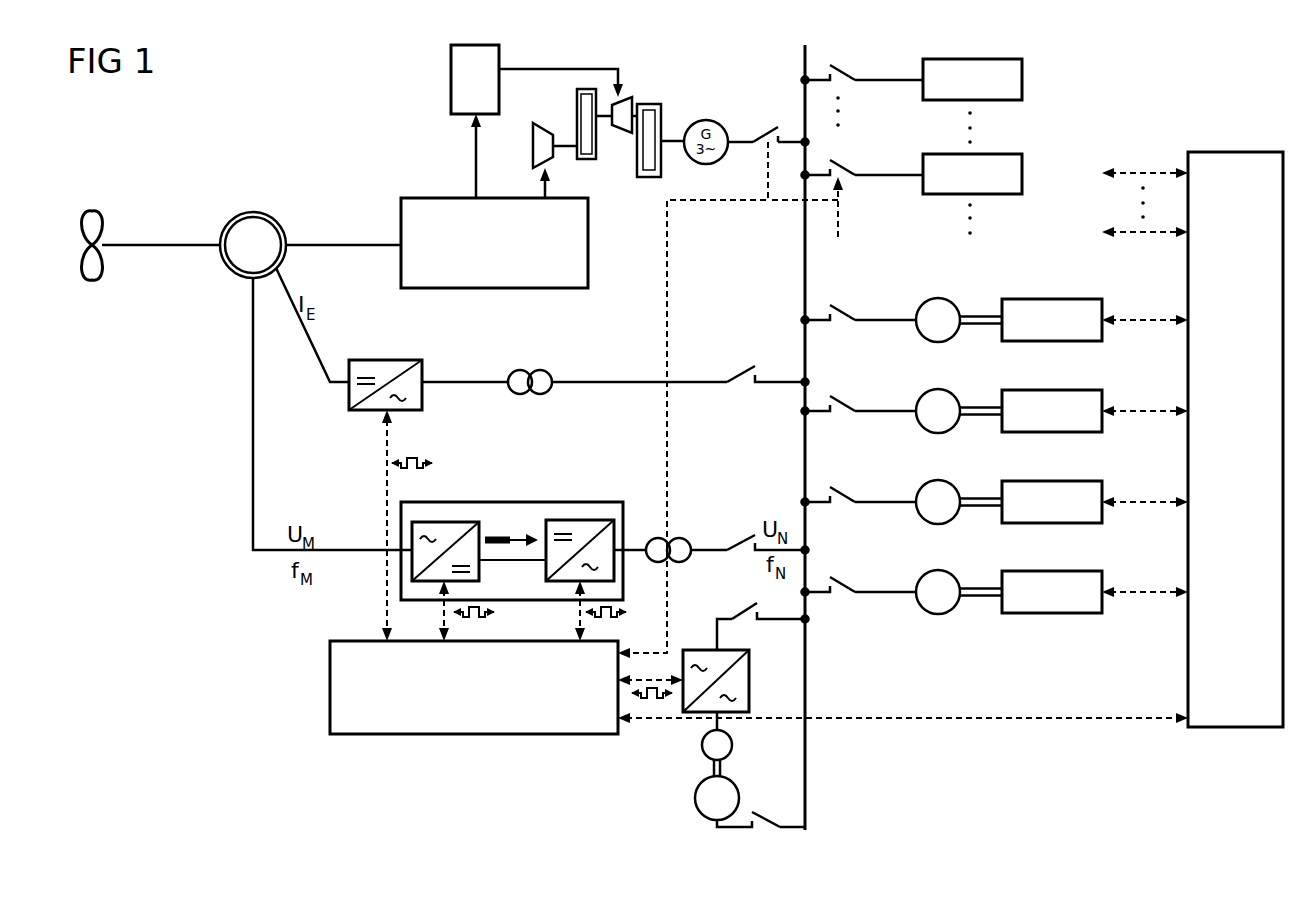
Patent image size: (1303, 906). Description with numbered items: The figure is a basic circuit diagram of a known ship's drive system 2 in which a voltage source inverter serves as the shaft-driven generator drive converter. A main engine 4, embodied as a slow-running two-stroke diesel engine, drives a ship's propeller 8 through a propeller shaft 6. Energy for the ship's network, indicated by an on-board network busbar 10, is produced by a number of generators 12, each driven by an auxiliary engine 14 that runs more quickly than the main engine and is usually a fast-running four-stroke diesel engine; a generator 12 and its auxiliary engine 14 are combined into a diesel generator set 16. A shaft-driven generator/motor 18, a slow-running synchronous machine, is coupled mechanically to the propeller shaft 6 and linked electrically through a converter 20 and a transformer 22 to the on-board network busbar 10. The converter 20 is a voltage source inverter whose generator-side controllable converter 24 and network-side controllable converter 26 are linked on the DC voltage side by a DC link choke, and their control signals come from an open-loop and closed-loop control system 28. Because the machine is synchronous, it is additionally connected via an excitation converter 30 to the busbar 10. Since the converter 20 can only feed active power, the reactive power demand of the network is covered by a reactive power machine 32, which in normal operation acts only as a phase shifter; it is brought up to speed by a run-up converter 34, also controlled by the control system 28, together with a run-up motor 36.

The ship's drive system 2 is at (168, 466).
The main engine 4 is at (515, 289).
The propeller shaft 6 is at (316, 243).
The ship's propeller 8 is at (93, 208).
The on-board network busbar 10 is at (805, 690).
The generator 12 is at (947, 300).
The auxiliary engine 14 is at (1103, 303).
The diesel generator set 16 is at (997, 630).
The shaft-driven generator/motor 18 is at (253, 211).
The converter 20 is at (512, 525).
The transformer 22 is at (657, 537).
The controllable converter 24 is at (455, 522).
The controllable converter 26 is at (580, 520).
The open-loop and closed-loop control system 28 is at (330, 696).
The excitation converter 30 is at (395, 360).
The reactive power machine 32 is at (695, 796).
The run-up converter 34 is at (749, 681).
The run-up motor 36 is at (702, 742).